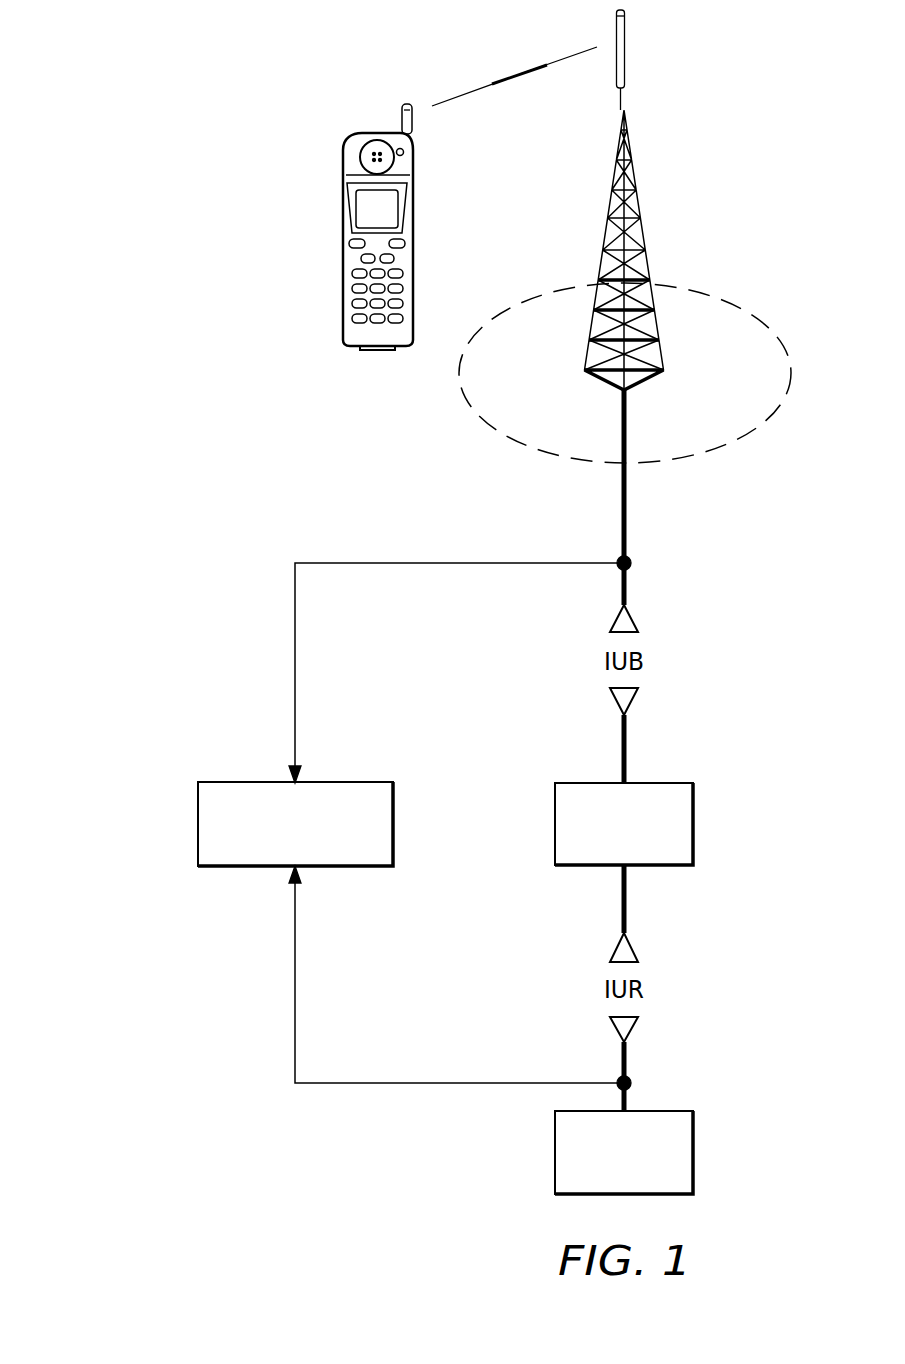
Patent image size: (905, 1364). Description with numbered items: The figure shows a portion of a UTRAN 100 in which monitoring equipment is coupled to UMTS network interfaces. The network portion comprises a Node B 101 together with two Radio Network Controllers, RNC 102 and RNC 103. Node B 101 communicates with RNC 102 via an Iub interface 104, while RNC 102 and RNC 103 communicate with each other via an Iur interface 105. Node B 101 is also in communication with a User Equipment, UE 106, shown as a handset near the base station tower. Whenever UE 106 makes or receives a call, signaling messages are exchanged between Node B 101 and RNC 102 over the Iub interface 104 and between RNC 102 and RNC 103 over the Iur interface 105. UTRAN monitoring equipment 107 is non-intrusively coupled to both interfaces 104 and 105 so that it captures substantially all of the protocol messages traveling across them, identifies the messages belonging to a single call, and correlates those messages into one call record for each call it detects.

The UTRAN 100 is at (118, 462).
The Node B 101 is at (604, 234).
The Radio Network Controller 102 is at (694, 815).
The Radio Network Controller 103 is at (694, 1160).
The Iub interface 104 is at (627, 514).
The Iur interface 105 is at (627, 900).
The User Equipment 106 is at (371, 347).
The UTRAN monitoring equipment 107 is at (197, 818).